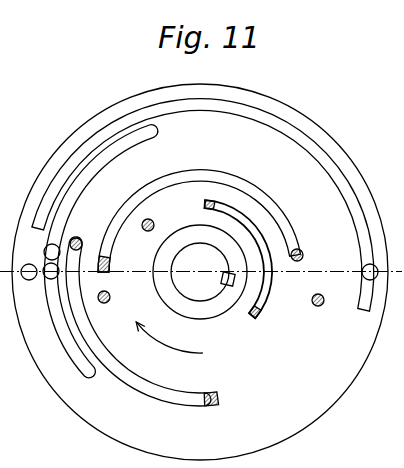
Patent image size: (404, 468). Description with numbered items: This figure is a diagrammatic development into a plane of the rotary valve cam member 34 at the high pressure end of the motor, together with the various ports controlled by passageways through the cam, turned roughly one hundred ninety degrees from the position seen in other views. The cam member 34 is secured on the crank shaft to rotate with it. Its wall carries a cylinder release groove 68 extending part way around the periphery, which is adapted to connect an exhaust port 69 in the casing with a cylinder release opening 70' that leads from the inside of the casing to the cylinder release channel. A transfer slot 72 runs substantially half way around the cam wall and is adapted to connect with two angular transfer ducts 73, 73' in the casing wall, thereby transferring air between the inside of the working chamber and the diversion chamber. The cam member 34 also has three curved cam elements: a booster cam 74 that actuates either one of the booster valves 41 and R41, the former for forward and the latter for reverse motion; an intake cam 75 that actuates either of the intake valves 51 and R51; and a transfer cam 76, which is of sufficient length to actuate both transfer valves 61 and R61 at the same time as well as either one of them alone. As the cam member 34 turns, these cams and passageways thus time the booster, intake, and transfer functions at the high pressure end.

The cam member 34 is at (313, 128).
The transfer slot 72 is at (287, 130).
The cylinder release groove 68 is at (104, 162).
The intake cam 75 is at (123, 375).
The transfer cam 76 is at (279, 216).
The booster cam 74 is at (270, 278).
The booster valve R41 is at (254, 320).
The booster valve 41 is at (149, 232).
The transfer valve 61 is at (109, 301).
The transfer valve R61 is at (302, 252).
The intake valve R51 is at (320, 306).
The intake valve 51 is at (80, 239).
The exhaust port 69 is at (58, 246).
The angular transfer duct 73 is at (28, 259).
The cylinder release opening 70' is at (40, 287).
The angular transfer duct 73' is at (354, 265).